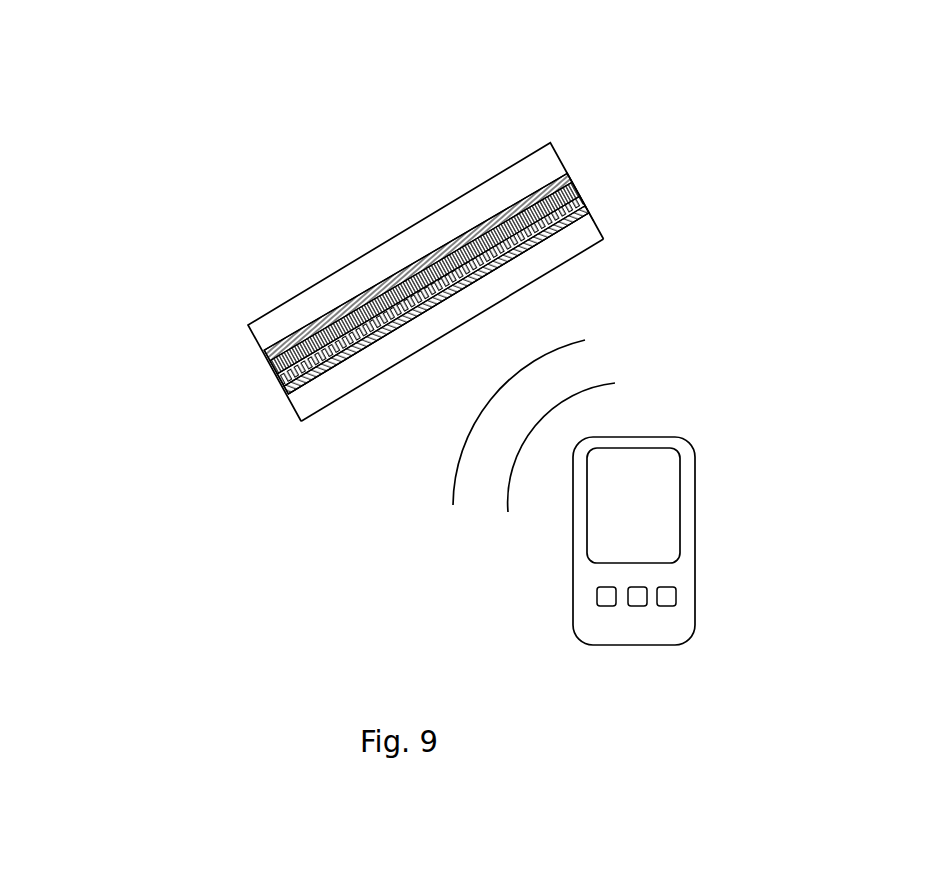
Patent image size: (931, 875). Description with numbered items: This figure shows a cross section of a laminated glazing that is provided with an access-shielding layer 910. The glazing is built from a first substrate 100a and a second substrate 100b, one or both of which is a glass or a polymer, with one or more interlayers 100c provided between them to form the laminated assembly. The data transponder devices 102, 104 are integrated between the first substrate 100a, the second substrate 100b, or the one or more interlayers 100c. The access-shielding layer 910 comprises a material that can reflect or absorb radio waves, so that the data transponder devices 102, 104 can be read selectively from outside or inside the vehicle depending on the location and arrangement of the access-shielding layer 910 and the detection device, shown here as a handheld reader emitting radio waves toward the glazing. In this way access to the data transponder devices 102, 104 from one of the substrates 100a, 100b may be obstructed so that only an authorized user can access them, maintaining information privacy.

The first substrate 100a is at (550, 143).
The second substrate 100b is at (552, 268).
The interlayer 100c is at (572, 177).
The data transponder device 102 is at (587, 187).
The data transponder device 104 is at (587, 187).
The access-shielding layer 910 is at (268, 367).